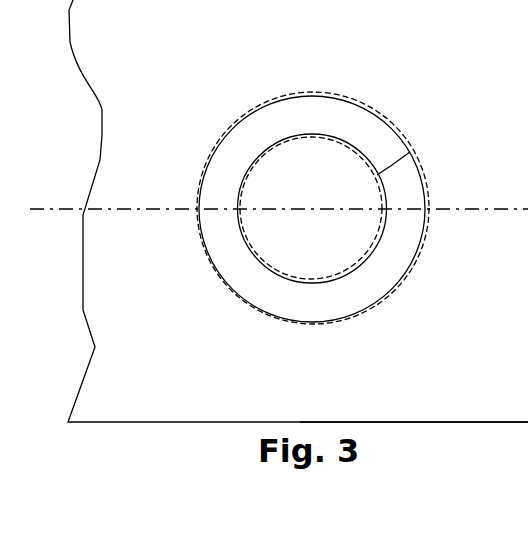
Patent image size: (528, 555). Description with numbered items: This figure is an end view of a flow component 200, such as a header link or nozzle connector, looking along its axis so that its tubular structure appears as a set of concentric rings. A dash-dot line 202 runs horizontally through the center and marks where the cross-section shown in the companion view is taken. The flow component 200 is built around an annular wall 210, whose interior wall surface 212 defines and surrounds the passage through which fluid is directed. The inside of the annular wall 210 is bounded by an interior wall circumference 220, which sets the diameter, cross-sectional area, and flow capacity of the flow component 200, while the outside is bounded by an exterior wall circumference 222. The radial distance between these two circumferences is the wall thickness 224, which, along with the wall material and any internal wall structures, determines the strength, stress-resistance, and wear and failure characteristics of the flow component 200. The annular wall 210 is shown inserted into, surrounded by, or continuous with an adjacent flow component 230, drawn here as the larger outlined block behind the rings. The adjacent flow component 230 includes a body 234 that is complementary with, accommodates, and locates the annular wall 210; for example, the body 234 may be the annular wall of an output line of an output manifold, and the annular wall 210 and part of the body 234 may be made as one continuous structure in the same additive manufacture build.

The flow component 200 is at (369, 312).
The line 202 is at (118, 208).
The annular wall 210 is at (343, 100).
The interior wall surface 212 is at (275, 147).
The interior wall circumference 220 is at (278, 272).
The exterior wall circumference 222 is at (223, 140).
The wall thickness 224 is at (392, 165).
The adjacent flow component 230 is at (213, 422).
The body 234 is at (430, 402).